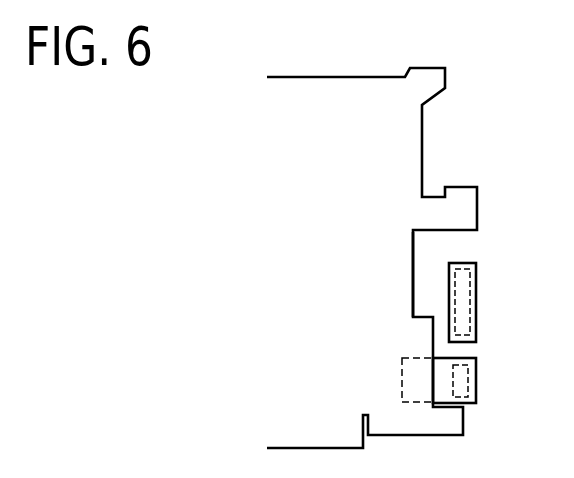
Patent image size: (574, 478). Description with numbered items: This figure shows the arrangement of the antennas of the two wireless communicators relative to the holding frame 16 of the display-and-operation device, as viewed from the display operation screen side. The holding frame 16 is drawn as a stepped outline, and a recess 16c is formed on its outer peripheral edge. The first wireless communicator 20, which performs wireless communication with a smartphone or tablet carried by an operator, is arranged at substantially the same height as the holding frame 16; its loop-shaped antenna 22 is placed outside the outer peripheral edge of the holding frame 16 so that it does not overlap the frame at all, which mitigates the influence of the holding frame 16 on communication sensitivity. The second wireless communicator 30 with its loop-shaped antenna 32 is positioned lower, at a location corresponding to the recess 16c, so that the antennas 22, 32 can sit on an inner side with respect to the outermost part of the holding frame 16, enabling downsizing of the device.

The holding frame 16 is at (332, 73).
The recess 16c is at (413, 248).
The first wireless communicator 20 is at (480, 284).
The antenna 22 is at (470, 310).
The second wireless communicator 30 is at (471, 408).
The antenna 32 is at (468, 376).